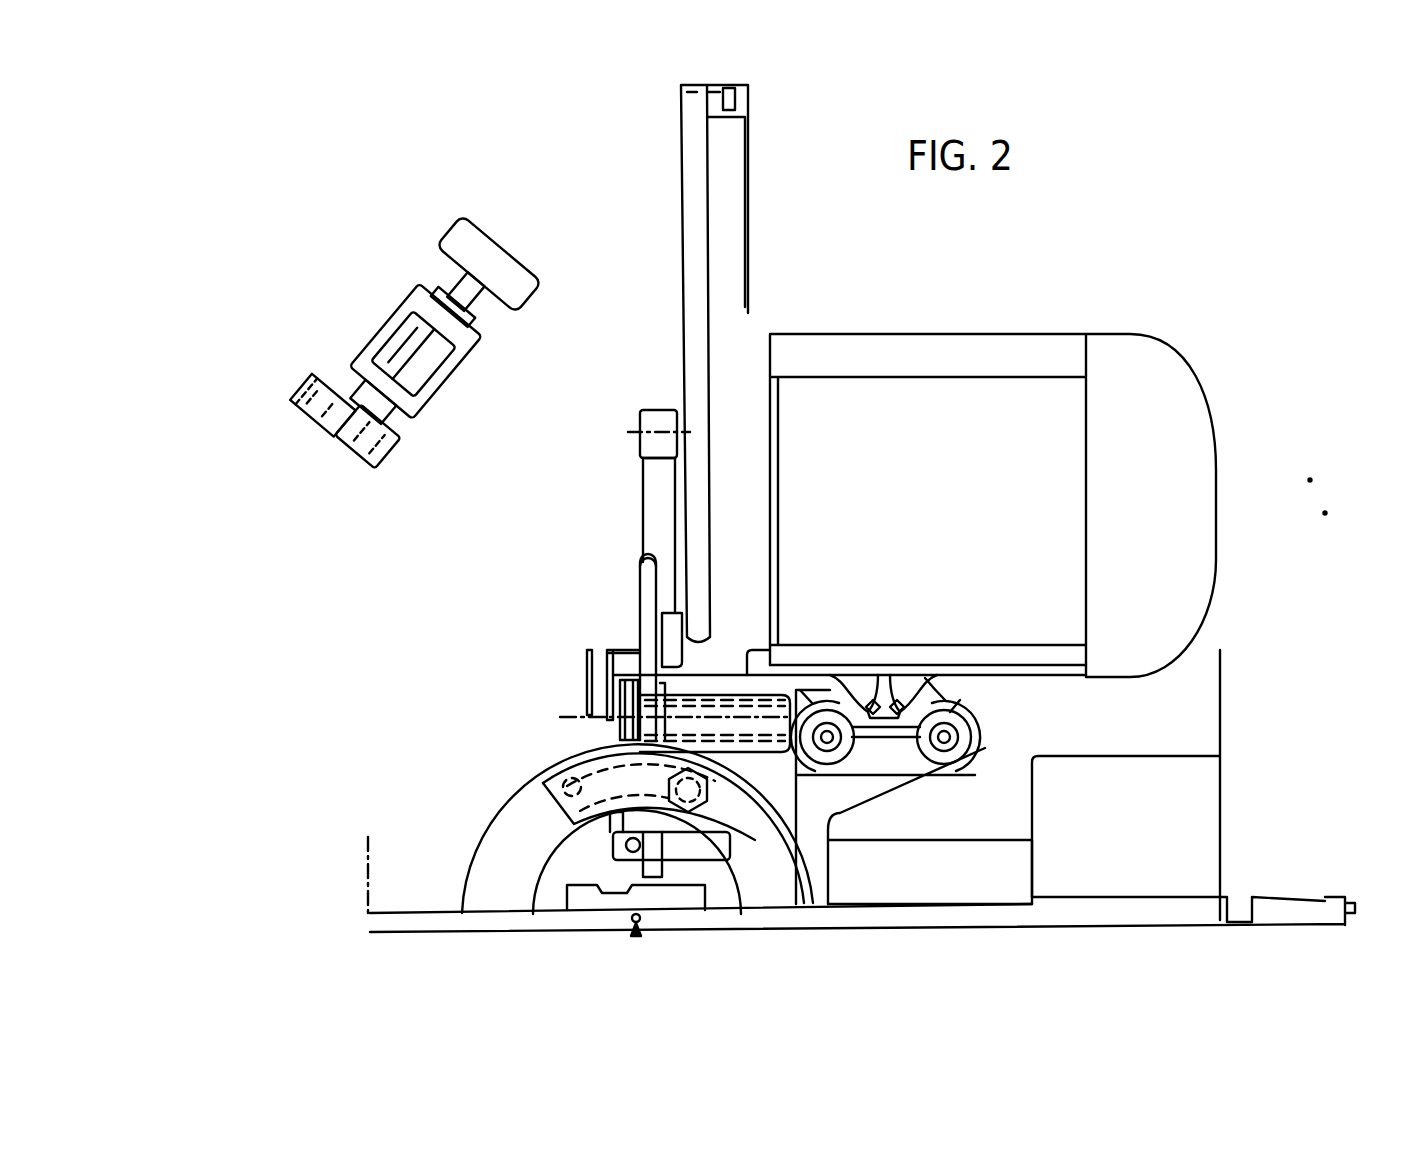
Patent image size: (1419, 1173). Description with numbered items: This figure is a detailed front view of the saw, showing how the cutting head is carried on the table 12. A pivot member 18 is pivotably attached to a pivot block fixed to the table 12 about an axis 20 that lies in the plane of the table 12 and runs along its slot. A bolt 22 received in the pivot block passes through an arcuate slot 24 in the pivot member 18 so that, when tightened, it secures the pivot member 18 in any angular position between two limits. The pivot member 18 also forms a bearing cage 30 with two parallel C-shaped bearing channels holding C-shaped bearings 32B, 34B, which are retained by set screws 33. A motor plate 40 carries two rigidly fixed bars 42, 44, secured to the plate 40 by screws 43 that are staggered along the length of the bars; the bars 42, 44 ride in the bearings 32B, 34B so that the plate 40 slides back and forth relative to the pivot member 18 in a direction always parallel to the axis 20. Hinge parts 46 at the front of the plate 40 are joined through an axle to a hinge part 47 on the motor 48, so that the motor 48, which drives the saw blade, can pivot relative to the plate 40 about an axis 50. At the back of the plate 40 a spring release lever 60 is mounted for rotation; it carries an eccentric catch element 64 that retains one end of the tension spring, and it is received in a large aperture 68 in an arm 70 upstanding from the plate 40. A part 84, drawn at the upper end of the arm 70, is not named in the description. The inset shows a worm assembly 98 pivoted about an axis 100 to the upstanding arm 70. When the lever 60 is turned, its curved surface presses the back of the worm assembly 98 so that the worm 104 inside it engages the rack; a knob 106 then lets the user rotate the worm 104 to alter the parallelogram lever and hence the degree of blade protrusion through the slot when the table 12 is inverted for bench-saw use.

The table 12 is at (910, 918).
The pivot member 18 is at (817, 863).
The axis 20 is at (636, 936).
The bolt 22 is at (703, 818).
The arcuate slot 24 is at (560, 796).
The bearing cage 30 is at (935, 792).
The C-shaped bearing 32B is at (812, 760).
The set screws 33 is at (950, 707).
The C-shaped bearing 34B is at (950, 760).
The motor plate 40 is at (938, 675).
The bar 42 is at (862, 752).
The screws 43 is at (890, 675).
The bar 44 is at (985, 748).
The hinge parts 46 is at (627, 730).
The hinge part 47 is at (700, 712).
The motor 48 is at (853, 363).
The axis 50 is at (625, 713).
The spring release lever 60 is at (640, 603).
The eccentric catch element 64 is at (602, 692).
The large aperture 68 is at (640, 563).
The arm 70 is at (652, 478).
The cap 84 is at (628, 430).
The worm assembly 98 is at (467, 350).
The axis 100 is at (393, 447).
The worm 104 is at (380, 340).
The knob 106 is at (513, 290).